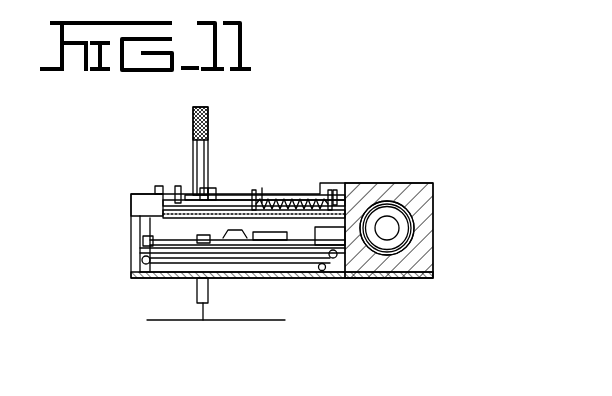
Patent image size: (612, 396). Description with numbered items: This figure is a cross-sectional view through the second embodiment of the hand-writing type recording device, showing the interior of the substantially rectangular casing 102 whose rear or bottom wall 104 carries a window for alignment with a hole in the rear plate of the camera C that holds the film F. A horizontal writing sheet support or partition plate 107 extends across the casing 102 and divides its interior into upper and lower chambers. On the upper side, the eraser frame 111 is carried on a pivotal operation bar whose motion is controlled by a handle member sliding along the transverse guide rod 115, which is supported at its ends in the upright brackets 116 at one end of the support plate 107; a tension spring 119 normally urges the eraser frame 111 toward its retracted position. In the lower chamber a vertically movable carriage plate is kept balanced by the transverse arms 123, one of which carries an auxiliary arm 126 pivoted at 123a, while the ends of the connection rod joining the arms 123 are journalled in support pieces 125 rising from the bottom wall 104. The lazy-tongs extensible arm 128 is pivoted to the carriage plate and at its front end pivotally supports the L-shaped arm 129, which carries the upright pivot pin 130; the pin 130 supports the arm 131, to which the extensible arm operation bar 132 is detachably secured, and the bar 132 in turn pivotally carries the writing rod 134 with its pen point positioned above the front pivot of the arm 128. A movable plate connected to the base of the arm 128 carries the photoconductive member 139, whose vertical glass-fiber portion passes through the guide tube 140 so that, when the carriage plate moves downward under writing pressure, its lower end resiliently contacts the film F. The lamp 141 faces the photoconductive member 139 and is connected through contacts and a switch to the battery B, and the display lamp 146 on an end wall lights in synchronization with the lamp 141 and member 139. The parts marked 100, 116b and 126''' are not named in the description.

The actuating rod 100 is at (275, 195).
The casing 102 is at (402, 179).
The rear or bottom wall 104 is at (398, 280).
The writing sheet support or partition plate 107 is at (218, 192).
The eraser frame 111 is at (337, 190).
The transverse guide rod 115 is at (262, 190).
The upright brackets 116 is at (156, 186).
The roller 116b is at (143, 262).
The tension spring 119 is at (301, 198).
The transverse arms 123 is at (170, 262).
The pivot 123a is at (236, 240).
The support pieces 125 is at (415, 274).
The auxiliary arm 126 is at (218, 304).
The slide bar 126''' is at (282, 295).
The extensible arm 128 is at (265, 258).
The L-shaped arm 129 is at (143, 242).
The pivot pin 130 is at (163, 203).
The arm 131 is at (133, 194).
The extensible arm operation bar 132 is at (178, 186).
The writing rod 134 is at (210, 130).
The photoconductive member 139 is at (203, 308).
The guide tube 140 is at (192, 298).
The lamp 141 is at (297, 272).
The display lamp 146 is at (150, 232).
The battery B is at (395, 238).
The camera C is at (396, 212).
The film F is at (213, 322).